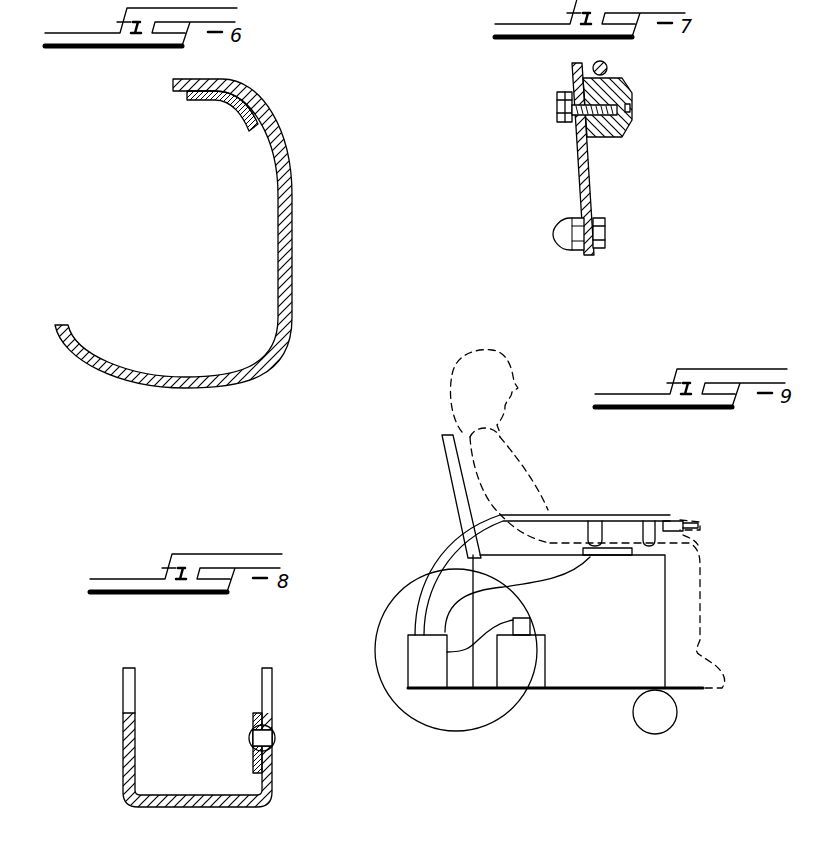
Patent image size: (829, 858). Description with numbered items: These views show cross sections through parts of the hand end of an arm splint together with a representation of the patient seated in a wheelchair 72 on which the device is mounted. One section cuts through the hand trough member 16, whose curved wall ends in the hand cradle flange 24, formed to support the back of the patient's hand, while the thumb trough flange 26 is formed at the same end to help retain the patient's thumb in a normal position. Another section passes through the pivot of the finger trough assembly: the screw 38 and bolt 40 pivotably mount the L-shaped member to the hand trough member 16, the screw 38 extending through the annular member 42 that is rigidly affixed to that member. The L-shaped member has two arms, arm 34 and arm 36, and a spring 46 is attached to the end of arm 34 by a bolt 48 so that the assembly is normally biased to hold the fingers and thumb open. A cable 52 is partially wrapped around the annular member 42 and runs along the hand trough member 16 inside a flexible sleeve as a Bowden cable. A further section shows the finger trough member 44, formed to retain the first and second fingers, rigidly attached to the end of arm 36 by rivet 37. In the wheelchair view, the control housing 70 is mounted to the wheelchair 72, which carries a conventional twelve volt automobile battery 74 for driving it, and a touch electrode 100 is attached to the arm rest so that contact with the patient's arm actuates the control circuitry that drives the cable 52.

In FIG. 6, the hand trough member 16 is at (290, 262).
In FIG. 6, the hand cradle flange 24 is at (203, 388).
In FIG. 6, the thumb trough flange 26 is at (270, 116).
In FIG. 7, the arm 34 is at (594, 185).
In FIG. 7, the screw 38 is at (632, 118).
In FIG. 7, the bolt 40 is at (557, 108).
In FIG. 7, the annular member 42 is at (632, 79).
In FIG. 7, the spring 46 is at (576, 248).
In FIG. 7, the bolt 48 is at (605, 229).
In FIG. 7, the cable 52 is at (607, 67).
In FIG. 8, the arm 36 is at (253, 718).
In FIG. 8, the rivet 37 is at (276, 735).
In FIG. 8, the finger trough member 44 is at (272, 793).
In FIG. 9, the control housing 70 is at (408, 672).
In FIG. 9, the wheelchair 72 is at (541, 704).
In FIG. 9, the battery 74 is at (545, 655).
In FIG. 9, the touch electrode 100 is at (612, 557).